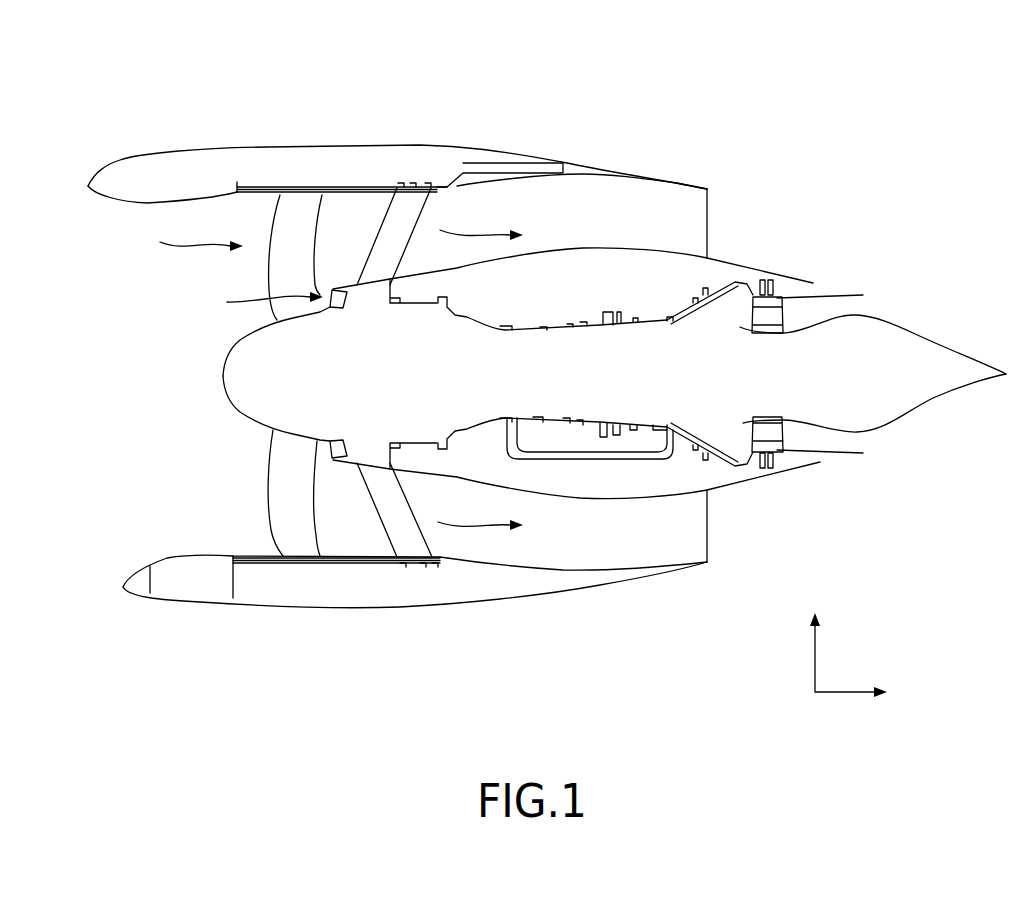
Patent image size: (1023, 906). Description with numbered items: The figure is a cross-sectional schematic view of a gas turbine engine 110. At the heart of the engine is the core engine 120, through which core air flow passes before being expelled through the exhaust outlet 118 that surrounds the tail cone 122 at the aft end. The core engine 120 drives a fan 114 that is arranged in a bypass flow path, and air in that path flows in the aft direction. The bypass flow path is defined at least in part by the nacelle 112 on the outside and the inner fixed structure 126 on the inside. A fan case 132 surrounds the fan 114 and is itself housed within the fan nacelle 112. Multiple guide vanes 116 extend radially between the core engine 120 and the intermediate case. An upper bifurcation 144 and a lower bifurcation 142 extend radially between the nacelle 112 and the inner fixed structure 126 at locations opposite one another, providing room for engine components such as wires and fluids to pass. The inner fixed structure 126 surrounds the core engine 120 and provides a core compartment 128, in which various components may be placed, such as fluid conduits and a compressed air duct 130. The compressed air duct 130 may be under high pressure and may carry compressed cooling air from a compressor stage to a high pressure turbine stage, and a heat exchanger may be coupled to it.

The gas turbine engine 110 is at (716, 100).
The nacelle 112 is at (268, 135).
The fan 114 is at (282, 484).
The guide vanes 116 is at (400, 527).
The exhaust outlet 118 is at (860, 305).
The core engine 120 is at (592, 314).
The tail cone 122 is at (902, 408).
The inner fixed structure 126 is at (597, 239).
The core compartment 128 is at (609, 491).
The compressed air duct 130 is at (674, 468).
The fan case 132 is at (261, 563).
The lower bifurcation 142 is at (685, 553).
The upper bifurcation 144 is at (712, 204).